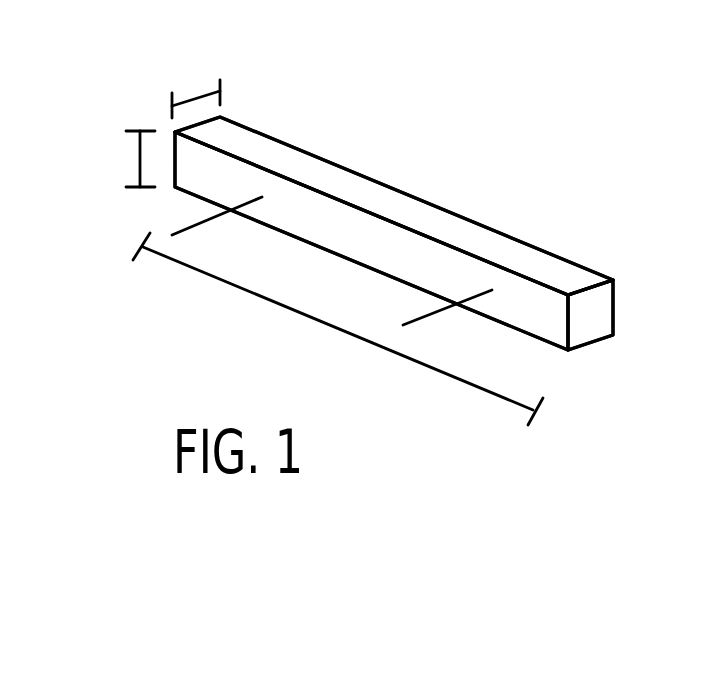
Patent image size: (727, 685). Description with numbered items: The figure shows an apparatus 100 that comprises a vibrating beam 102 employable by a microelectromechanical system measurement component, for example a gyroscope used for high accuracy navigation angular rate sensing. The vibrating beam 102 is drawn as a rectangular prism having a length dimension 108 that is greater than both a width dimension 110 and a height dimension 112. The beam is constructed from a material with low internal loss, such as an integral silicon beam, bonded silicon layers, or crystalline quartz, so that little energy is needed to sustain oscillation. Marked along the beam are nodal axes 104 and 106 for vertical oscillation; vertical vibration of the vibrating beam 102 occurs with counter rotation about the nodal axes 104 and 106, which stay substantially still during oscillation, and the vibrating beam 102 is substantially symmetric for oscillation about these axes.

The apparatus 100 is at (594, 78).
The vibrating beam 102 is at (407, 210).
The nodal axis 104 is at (620, 237).
The nodal axis 106 is at (393, 138).
The length dimension 108 is at (467, 386).
The width dimension 110 is at (193, 97).
The height dimension 112 is at (137, 157).